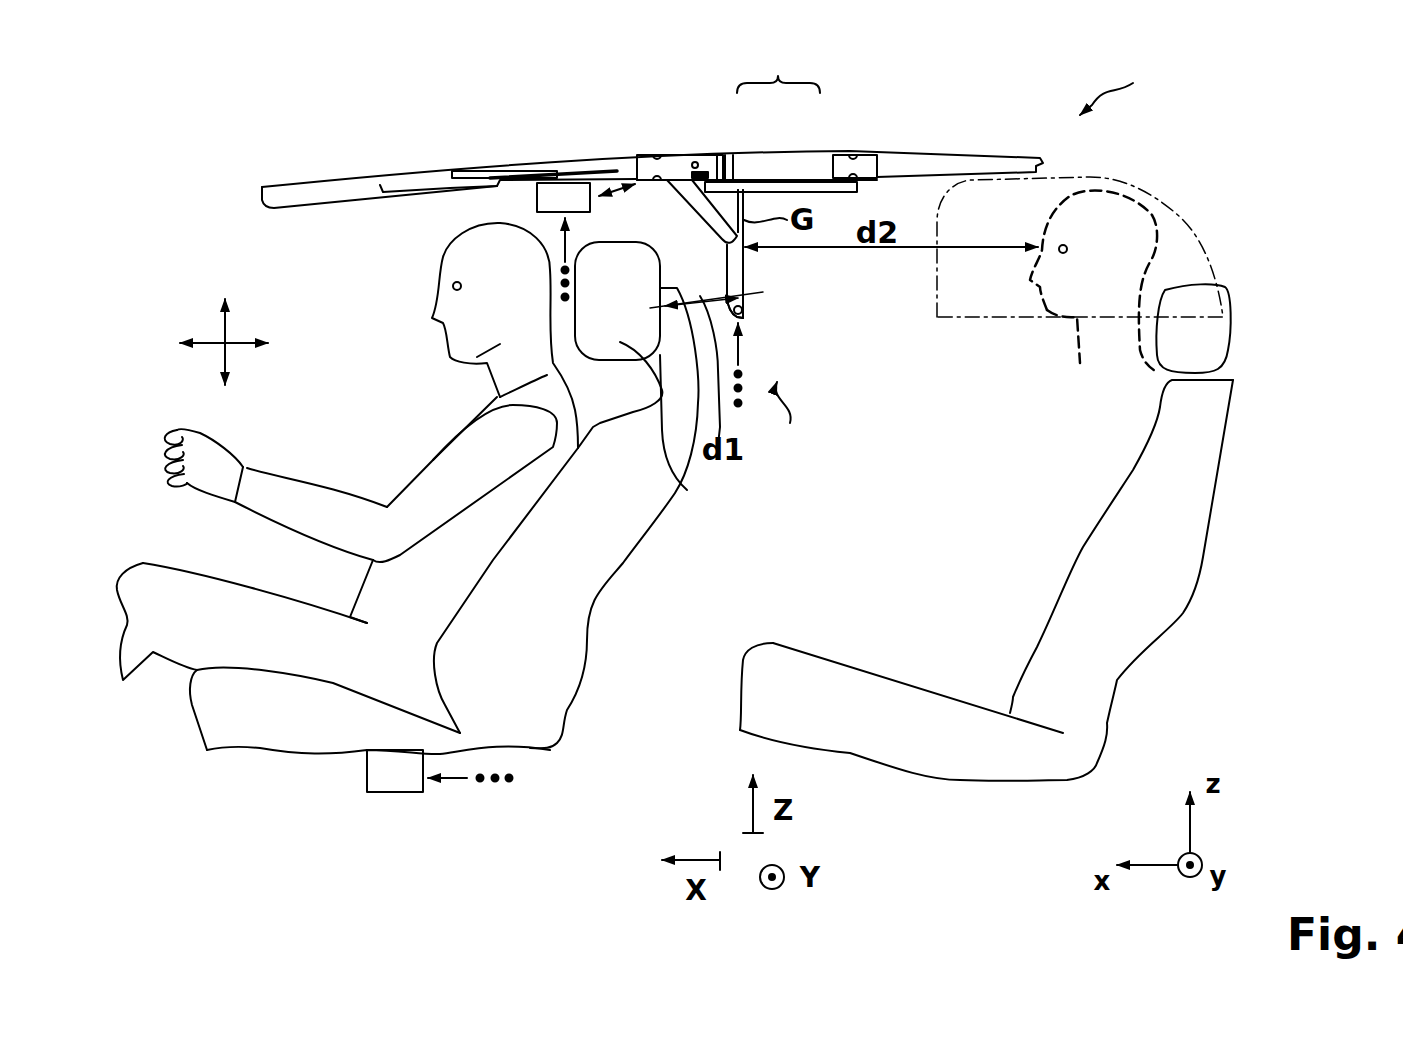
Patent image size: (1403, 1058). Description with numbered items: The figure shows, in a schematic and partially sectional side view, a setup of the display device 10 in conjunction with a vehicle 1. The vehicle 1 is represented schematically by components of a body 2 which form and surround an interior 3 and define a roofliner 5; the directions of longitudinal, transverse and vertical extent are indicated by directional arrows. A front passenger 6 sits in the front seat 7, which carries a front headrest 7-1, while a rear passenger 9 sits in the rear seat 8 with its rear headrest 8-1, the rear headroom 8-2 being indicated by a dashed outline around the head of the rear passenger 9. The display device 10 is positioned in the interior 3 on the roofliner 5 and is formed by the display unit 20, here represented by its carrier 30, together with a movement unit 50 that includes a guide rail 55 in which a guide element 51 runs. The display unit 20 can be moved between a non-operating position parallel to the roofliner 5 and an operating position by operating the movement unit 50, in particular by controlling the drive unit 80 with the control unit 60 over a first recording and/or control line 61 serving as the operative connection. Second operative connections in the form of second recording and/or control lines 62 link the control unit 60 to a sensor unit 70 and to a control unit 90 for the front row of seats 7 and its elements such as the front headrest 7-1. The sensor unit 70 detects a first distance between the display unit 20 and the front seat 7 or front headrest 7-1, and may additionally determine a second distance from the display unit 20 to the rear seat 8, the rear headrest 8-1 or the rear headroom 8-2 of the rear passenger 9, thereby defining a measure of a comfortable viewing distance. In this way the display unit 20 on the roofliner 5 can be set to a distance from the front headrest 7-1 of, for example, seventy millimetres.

The vehicle 1 is at (1120, 86).
The body 2 is at (930, 157).
The interior 3 is at (220, 327).
The roofliner 5 is at (334, 207).
The front passenger/occupant 6 is at (443, 473).
The front seat/row of seats 7 is at (547, 707).
The front headrest 7-1 is at (687, 490).
The rear seat/row of seats 8 is at (1133, 620).
The rear headrest 8-1 is at (1213, 322).
The rear headroom 8-2 is at (1178, 207).
The rear passenger/occupant 9 is at (1150, 262).
The display device 10 is at (790, 421).
The display unit 20 is at (743, 277).
The carrier 30 is at (735, 254).
The movement unit 50 is at (778, 66).
The guide element 51 is at (730, 188).
The guide rail 55 is at (808, 188).
The control unit 60 is at (563, 197).
The operative connection, recording and/or control line 61 is at (616, 188).
The operative connection, recording and/or control line 62 is at (553, 240).
The sensor unit 70 is at (744, 310).
The drive unit 80 is at (665, 167).
The control unit for the seat/the front row of seats 90 is at (388, 778).